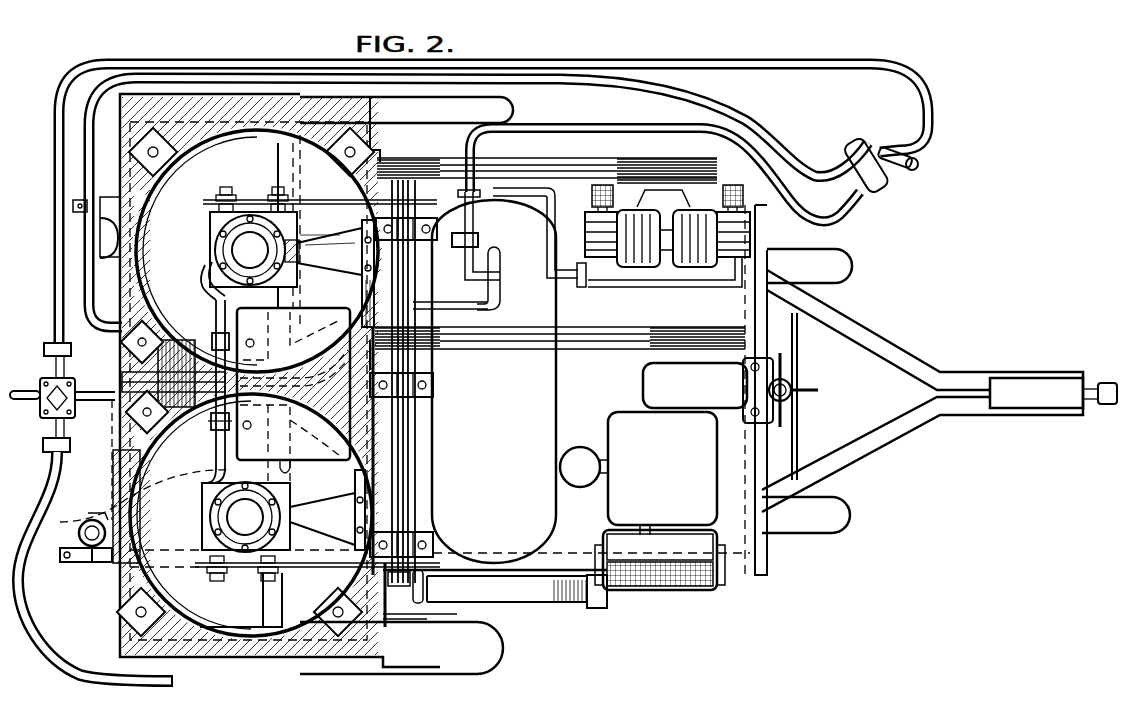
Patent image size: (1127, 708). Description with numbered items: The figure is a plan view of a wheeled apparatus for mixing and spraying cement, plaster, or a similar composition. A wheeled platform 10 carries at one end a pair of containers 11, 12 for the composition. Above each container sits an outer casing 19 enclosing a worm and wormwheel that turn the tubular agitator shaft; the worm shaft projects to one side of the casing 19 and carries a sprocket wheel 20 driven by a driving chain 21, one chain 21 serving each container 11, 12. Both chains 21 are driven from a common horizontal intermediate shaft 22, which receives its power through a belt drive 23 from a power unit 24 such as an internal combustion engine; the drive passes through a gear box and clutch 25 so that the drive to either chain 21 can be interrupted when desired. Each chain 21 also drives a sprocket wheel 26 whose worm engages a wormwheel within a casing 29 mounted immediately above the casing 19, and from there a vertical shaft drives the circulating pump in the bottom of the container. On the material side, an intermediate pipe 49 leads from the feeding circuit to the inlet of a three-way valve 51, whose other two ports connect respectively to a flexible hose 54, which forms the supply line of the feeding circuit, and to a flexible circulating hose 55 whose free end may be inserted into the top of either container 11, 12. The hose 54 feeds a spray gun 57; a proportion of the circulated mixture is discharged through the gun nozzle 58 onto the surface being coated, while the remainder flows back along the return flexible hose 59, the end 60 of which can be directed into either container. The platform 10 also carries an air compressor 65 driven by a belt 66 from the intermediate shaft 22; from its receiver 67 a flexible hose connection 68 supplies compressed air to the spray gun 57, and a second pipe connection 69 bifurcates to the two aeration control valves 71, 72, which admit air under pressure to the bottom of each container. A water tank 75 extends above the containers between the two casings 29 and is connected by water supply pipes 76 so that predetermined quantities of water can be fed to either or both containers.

The wheeled platform 10 is at (560, 558).
The container 11 is at (140, 257).
The container 12 is at (137, 535).
The outer casing 19 is at (297, 270).
The sprocket wheel 20 is at (275, 196).
The driving chain 21 is at (326, 190).
The intermediate shaft 22 is at (412, 196).
The belt drive 23 is at (592, 348).
The power unit 24 is at (642, 501).
The gear box and clutch 25 is at (638, 395).
The sprocket wheel 26 is at (222, 196).
The casing 29 is at (215, 228).
The intermediate pipe 49 is at (88, 402).
The 3-way valve 51 is at (44, 410).
The flexible hose 54 is at (54, 256).
The flexible circulating hose 55 is at (50, 492).
The spray gun 57 is at (880, 165).
The gun nozzle 58 is at (919, 166).
The return flexible hose 59 is at (84, 293).
The end of return hose 60 is at (195, 328).
The air compressor 65 is at (707, 262).
The belt 66 is at (512, 168).
The receiver 67 is at (558, 310).
The flexible hose connection 68 is at (680, 131).
The second pipe connection 69 is at (485, 307).
The aeration control valve 71 is at (215, 320).
The aeration valve 72 is at (212, 425).
The water tank 75 is at (345, 400).
The water supply pipe 76 is at (205, 470).